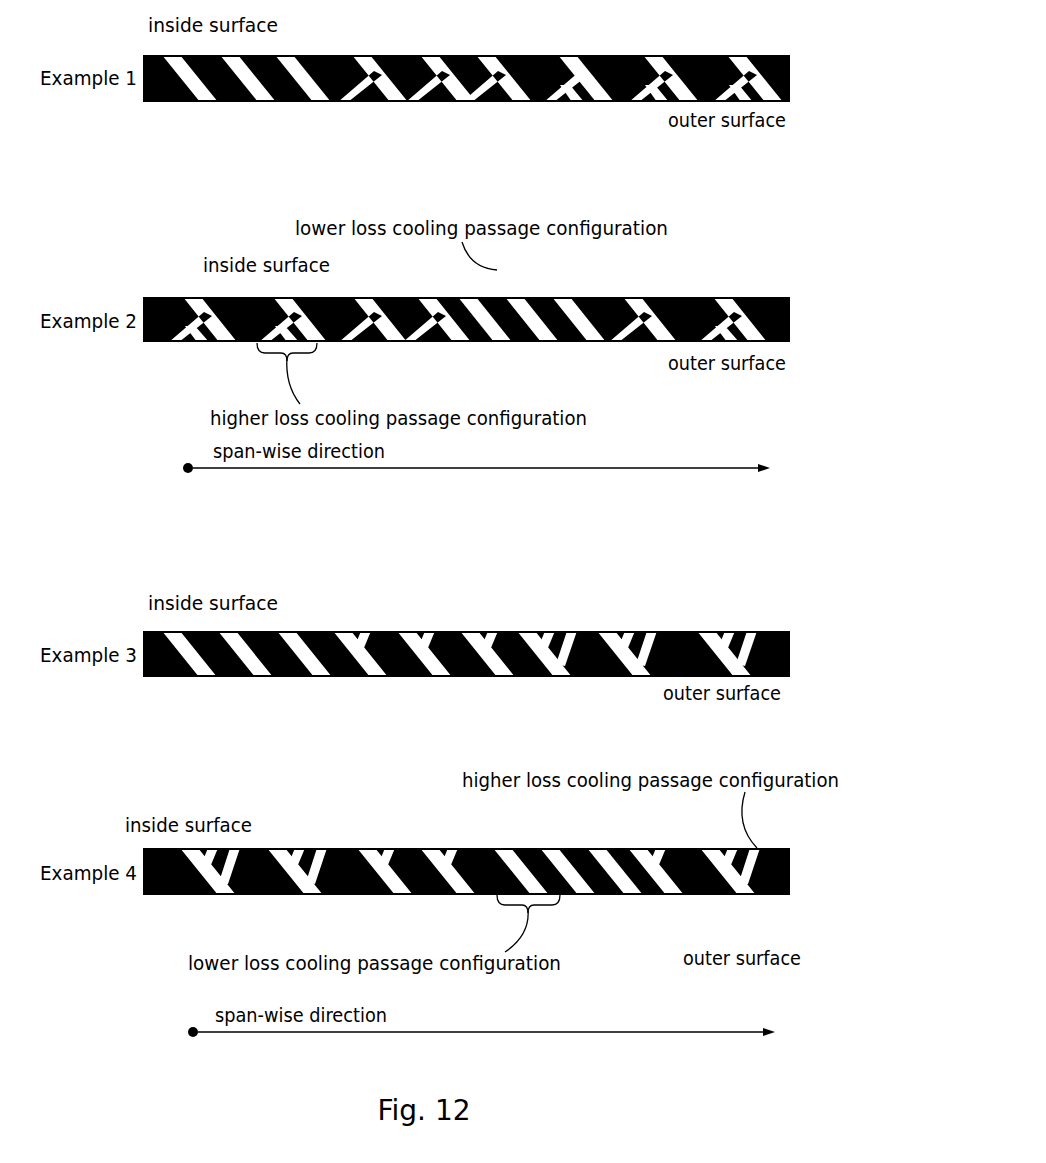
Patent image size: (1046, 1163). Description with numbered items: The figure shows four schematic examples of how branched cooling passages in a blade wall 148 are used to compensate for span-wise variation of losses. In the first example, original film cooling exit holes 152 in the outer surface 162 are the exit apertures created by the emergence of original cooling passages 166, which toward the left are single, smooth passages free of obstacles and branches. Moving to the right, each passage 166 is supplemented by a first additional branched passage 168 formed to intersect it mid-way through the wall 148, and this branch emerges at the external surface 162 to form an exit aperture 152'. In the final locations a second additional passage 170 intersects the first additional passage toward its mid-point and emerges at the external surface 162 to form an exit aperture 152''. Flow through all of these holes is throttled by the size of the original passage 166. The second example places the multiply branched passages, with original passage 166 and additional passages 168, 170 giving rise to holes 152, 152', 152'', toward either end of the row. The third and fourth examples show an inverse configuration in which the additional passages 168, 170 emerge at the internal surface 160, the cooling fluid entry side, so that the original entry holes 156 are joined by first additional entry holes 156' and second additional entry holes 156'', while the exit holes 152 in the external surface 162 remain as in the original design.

The blade wall 148 is at (791, 82).
The film cooling exit hole 152 is at (414, 500).
The first additional exit aperture 152' is at (287, 222).
The second additional exit aperture 152'' is at (454, 222).
The original fluid entry hole 156 is at (532, 430).
The first additional entry hole 156' is at (473, 621).
The second additional entry hole 156'' is at (606, 632).
The internal surface 160 is at (766, 56).
The outer surface 162 is at (782, 105).
The original cooling passage 166 is at (650, 55).
The first additional branched passage 168 is at (358, 102).
The second additional passage 170 is at (582, 102).